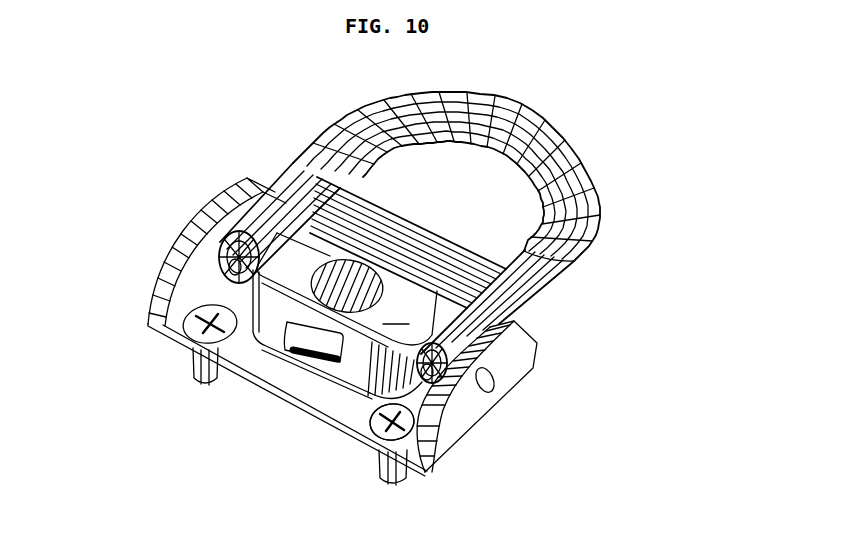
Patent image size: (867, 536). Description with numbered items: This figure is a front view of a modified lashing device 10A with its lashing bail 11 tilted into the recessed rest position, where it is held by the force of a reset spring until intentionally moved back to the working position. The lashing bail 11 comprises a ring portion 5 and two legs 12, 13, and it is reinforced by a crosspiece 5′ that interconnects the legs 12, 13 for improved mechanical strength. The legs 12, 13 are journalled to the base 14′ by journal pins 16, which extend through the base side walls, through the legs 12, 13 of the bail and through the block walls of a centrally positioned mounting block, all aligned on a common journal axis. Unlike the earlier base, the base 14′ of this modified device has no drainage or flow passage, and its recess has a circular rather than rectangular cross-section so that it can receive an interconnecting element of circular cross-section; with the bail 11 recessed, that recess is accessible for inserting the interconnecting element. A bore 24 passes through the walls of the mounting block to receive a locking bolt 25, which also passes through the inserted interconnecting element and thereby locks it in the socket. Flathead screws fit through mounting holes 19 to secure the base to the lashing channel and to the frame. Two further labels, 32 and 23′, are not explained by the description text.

The ring portion 5 is at (524, 103).
The crosspiece 5′ is at (418, 218).
The modified lashing device 10A is at (604, 247).
The lashing bail 11 is at (594, 143).
The leg 12 is at (520, 303).
The leg 13 is at (282, 185).
The base 14′ is at (202, 274).
The journal pin 16 is at (497, 378).
The mounting hole 19 is at (397, 427).
The screw 32 is at (397, 427).
The screw 23′ is at (323, 267).
The bore 24 is at (343, 260).
The locking bolt 25 is at (317, 343).